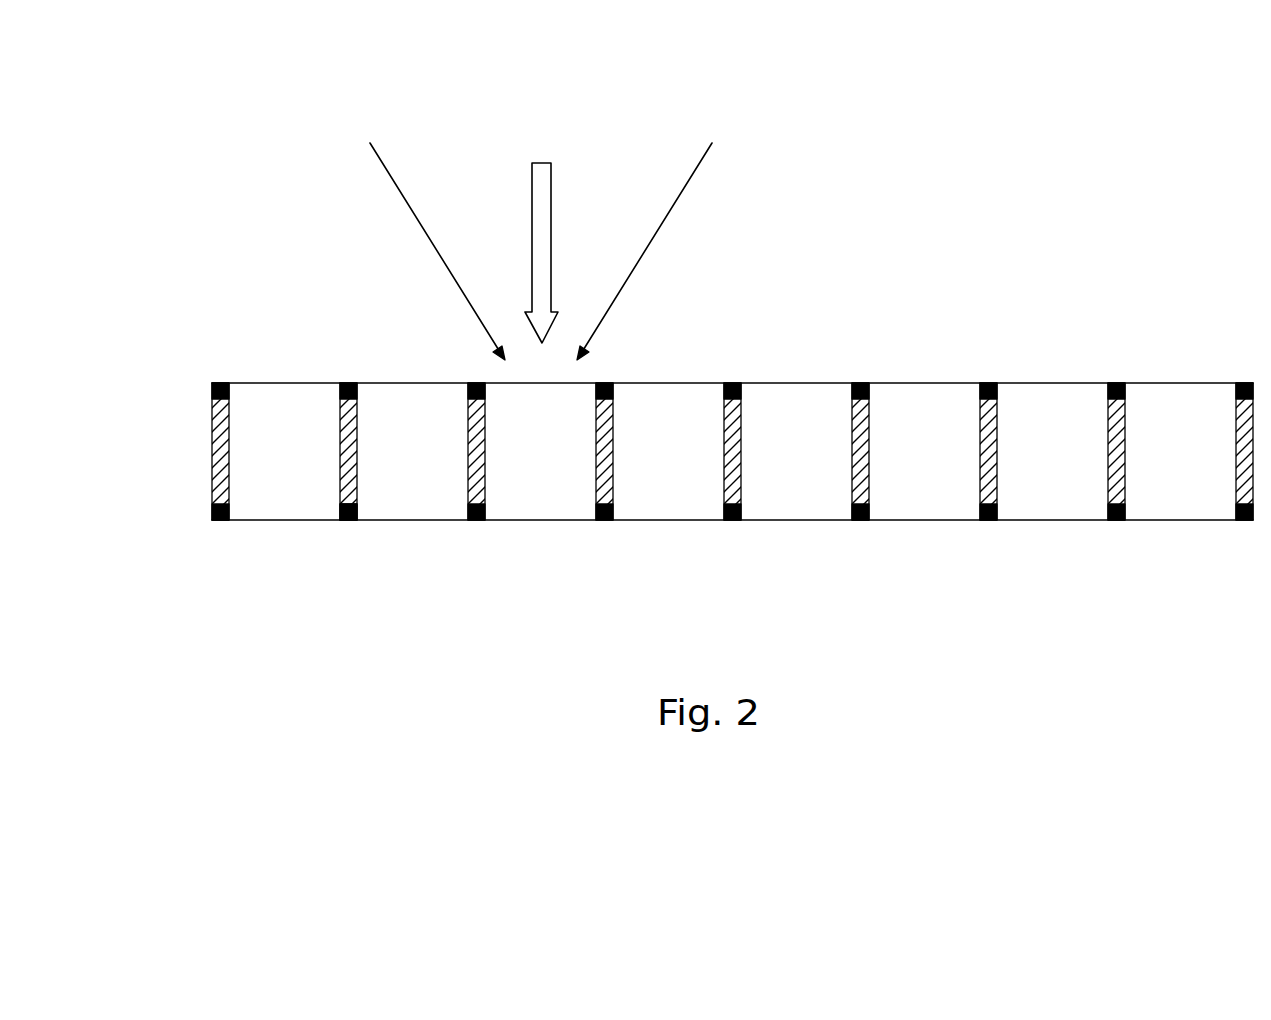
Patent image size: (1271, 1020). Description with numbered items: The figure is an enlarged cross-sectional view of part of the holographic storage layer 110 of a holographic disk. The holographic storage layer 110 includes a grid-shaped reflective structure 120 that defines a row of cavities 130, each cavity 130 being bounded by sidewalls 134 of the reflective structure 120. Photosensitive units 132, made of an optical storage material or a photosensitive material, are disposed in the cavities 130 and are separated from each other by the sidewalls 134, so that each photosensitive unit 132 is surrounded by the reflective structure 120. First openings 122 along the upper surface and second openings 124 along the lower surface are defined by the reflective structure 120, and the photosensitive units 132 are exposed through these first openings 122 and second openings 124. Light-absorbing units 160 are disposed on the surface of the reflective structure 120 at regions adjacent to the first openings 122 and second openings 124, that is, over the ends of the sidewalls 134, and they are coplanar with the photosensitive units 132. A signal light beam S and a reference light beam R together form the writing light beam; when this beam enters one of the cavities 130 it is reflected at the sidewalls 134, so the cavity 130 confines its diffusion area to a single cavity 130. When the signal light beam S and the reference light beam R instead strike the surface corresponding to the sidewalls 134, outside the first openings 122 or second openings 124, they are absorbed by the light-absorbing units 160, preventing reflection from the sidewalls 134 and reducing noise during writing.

The holographic storage layer 110 is at (91, 257).
The reflective structure 120 is at (132, 302).
The first openings 122 is at (294, 384).
The second openings 124 is at (248, 524).
The cavities 130 is at (258, 413).
The photosensitive units 132 is at (386, 383).
The sidewalls 134 is at (358, 488).
The light-absorbing units 160 is at (993, 383).
The signal light beam S is at (551, 183).
The reference light beam R is at (395, 183).